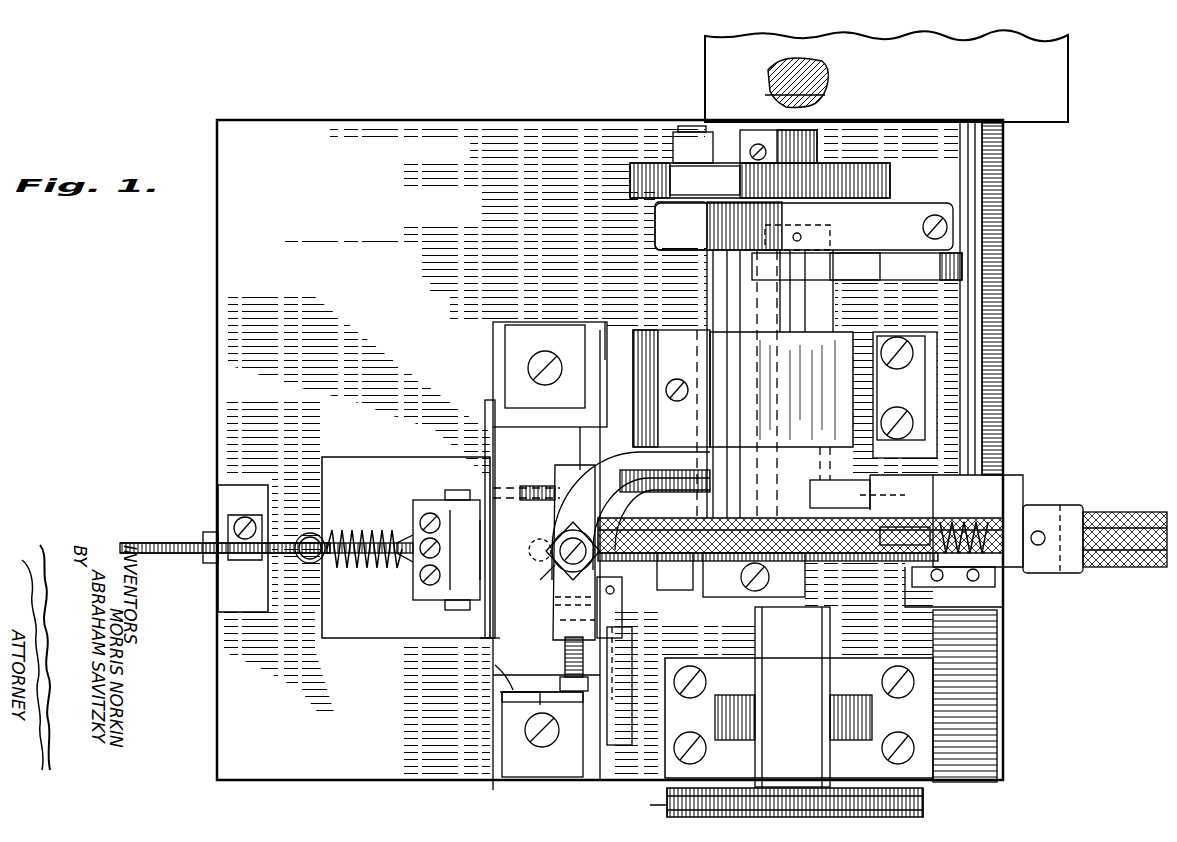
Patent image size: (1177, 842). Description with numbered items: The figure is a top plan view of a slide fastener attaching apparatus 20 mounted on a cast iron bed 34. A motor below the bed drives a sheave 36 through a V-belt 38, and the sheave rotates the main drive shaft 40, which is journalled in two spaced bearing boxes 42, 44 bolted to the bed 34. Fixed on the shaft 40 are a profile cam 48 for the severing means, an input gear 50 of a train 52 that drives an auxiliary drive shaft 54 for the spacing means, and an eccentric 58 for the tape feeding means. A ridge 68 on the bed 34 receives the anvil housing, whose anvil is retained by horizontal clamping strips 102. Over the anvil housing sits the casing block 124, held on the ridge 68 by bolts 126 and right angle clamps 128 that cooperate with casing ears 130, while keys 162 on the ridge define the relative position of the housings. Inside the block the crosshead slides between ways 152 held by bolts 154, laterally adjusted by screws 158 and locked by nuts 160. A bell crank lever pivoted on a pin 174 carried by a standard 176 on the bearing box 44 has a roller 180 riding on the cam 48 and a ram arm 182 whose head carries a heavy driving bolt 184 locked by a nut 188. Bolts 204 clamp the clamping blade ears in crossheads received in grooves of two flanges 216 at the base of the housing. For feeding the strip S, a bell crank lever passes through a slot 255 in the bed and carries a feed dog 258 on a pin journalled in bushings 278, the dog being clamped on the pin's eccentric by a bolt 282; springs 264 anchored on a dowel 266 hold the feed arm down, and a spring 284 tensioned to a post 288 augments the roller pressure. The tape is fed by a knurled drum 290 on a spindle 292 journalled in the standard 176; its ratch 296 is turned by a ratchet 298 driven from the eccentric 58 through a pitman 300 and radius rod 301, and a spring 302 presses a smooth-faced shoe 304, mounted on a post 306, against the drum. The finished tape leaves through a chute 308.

The slide fastener attaching apparatus 20 is at (274, 171).
The bed 34 is at (240, 385).
The sheave 36 is at (668, 800).
The V-belt 38 is at (920, 819).
The main drive shaft 40 is at (818, 135).
The bearing box 42 is at (917, 668).
The bearing box 44 is at (905, 395).
The profile cam 48 is at (888, 495).
The input gear 50 is at (824, 84).
The gear train 52 is at (1043, 106).
The auxiliary drive shaft 54 is at (975, 215).
The eccentric 58 is at (835, 270).
The ridge 68 is at (497, 781).
The clamping strips 102 is at (622, 744).
The casing block 124 is at (490, 626).
The bolts 126 is at (528, 368).
The right angle clamps 128 is at (522, 306).
The casing ears 130 is at (500, 680).
The ways 152 is at (556, 594).
The bolts 154 is at (542, 620).
The screws 158 is at (565, 653).
The nuts 160 is at (565, 687).
The keys 162 is at (498, 696).
The pin 174 is at (677, 330).
The standard 176 is at (781, 389).
The roller 180 is at (815, 480).
The ram arm 182 is at (640, 460).
The driving bolt 184 is at (560, 537).
The nut 188 is at (555, 578).
The bolts 204 is at (613, 607).
The flanges 216 is at (627, 663).
The slot 255 is at (348, 460).
The feed dog 258 is at (452, 545).
The springs 264 is at (355, 570).
The dowel 266 is at (393, 541).
The bushings 278 is at (450, 602).
The bolt 282 is at (418, 532).
The spring 284 is at (355, 531).
The post 288 is at (228, 493).
The knurled drum 290 is at (778, 607).
The spindle 292 is at (758, 134).
The ratch 296 is at (630, 172).
The ratchet 298 is at (690, 181).
The pitman 300 is at (868, 268).
The radius rod 301 is at (955, 243).
The spring 302 is at (972, 530).
The shoe 304 is at (895, 548).
The post 306 is at (1020, 478).
The chute 308 is at (1120, 512).
The strip S is at (165, 541).